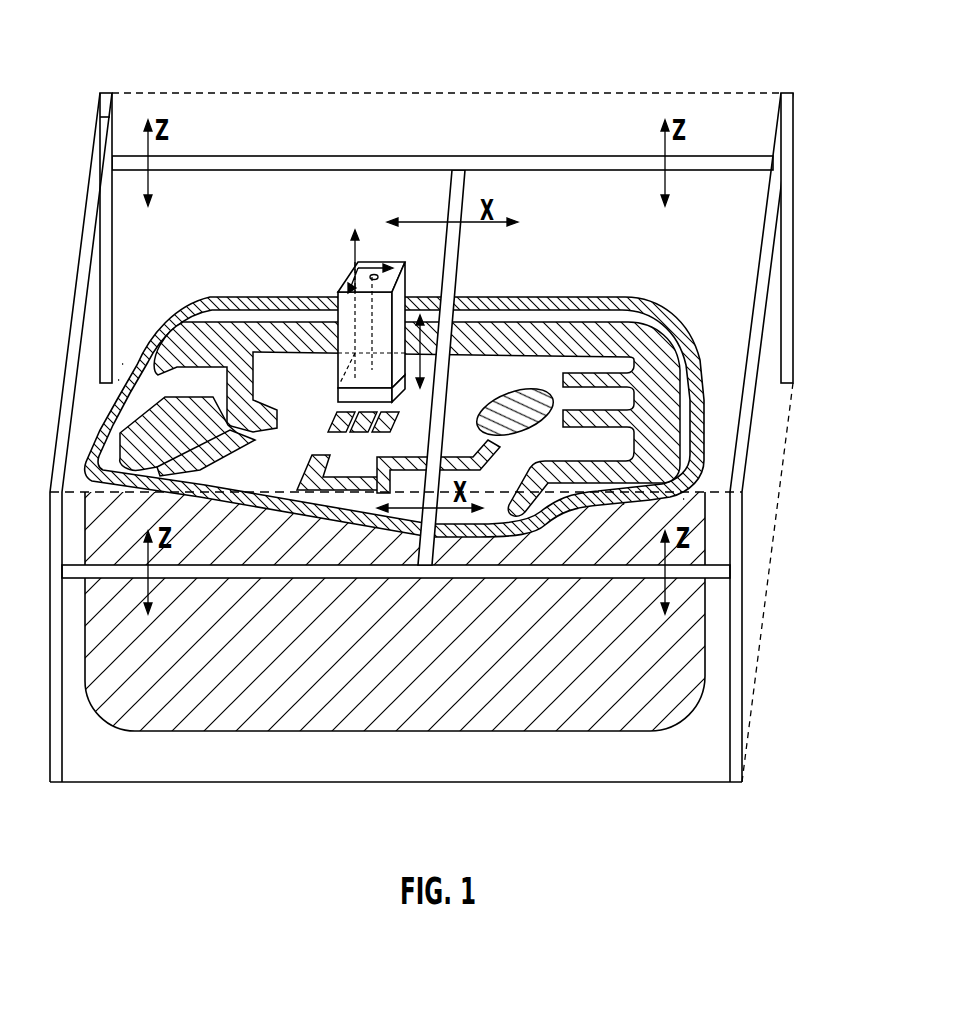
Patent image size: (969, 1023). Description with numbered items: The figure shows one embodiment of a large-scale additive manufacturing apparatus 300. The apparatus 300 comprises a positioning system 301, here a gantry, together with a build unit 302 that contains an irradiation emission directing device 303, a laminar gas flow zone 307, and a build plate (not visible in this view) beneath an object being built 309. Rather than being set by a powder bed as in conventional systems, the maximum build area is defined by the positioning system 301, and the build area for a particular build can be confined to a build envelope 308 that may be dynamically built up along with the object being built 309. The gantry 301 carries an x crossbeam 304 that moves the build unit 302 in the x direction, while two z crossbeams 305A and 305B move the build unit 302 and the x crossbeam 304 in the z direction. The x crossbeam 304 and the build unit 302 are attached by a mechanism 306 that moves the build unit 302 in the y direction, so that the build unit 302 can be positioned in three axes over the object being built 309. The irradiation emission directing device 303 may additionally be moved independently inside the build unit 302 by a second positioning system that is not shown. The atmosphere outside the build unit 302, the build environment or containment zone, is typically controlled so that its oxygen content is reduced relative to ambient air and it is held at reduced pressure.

The large-scale additive manufacturing apparatus 300 is at (473, 78).
The positioning system 301 is at (105, 94).
The build unit 302 is at (358, 257).
The irradiation emission directing device 303 is at (378, 276).
The x crossbeam 304 is at (460, 255).
The z crossbeam 305A is at (235, 156).
The z crossbeam 305B is at (220, 578).
The mechanism 306 is at (407, 353).
The laminar gas flow zone 307 is at (363, 392).
The build envelope 308 is at (657, 305).
The object being built 309 is at (703, 380).